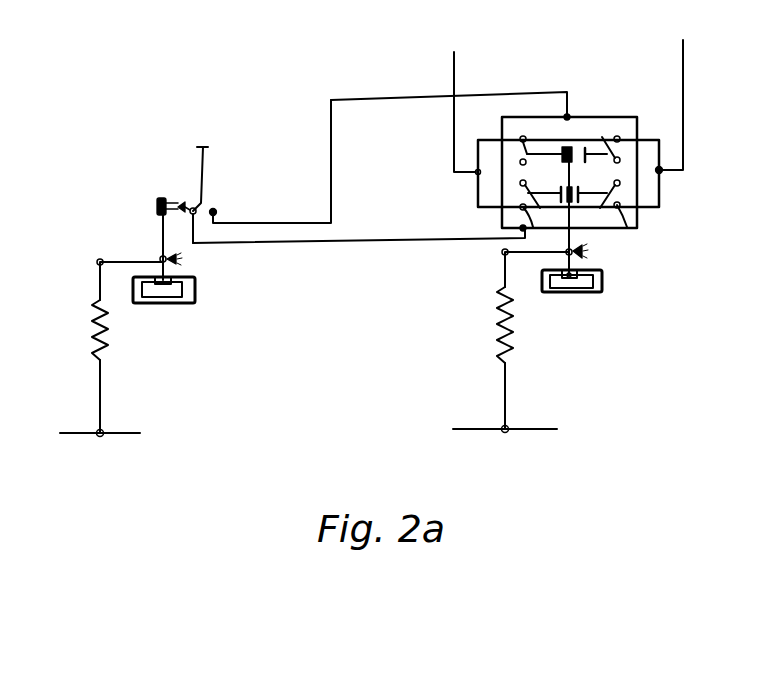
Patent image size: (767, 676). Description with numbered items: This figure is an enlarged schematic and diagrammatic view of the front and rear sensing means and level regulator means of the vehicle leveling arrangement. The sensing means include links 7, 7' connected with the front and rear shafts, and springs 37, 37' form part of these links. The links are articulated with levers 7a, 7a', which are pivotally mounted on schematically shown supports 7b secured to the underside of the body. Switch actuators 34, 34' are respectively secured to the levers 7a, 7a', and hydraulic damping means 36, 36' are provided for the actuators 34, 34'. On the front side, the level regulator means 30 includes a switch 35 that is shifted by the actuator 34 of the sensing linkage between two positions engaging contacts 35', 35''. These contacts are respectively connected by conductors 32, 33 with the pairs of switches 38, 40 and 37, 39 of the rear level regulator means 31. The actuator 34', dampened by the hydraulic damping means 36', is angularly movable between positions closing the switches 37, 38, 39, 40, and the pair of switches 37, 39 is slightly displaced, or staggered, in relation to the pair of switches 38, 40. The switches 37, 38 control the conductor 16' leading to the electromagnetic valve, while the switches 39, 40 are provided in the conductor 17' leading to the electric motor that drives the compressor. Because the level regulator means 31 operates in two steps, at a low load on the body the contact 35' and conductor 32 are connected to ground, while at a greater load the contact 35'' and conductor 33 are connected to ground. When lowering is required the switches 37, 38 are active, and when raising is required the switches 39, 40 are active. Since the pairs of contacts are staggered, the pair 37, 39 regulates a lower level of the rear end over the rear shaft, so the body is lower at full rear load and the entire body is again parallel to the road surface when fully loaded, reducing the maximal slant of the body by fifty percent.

The level regulator means 30 is at (147, 205).
The level regulator means 31 is at (682, 185).
The conductor 32 is at (343, 245).
The conductor 33 is at (362, 98).
The switch actuator 34 is at (138, 247).
The switch actuator 34' is at (623, 260).
The switch 35 is at (188, 179).
The contact 35' is at (181, 226).
The contact 35'' is at (271, 161).
The hydraulic damping means 36 is at (185, 308).
The hydraulic damping means 36' is at (599, 287).
The spring / switch 37 is at (311, 229).
The spring 37' is at (481, 325).
The switch 38 is at (533, 214).
The switch 39 is at (617, 136).
The switch 40 is at (622, 214).
The link 7 is at (100, 398).
The link 7' is at (505, 398).
The lever 7a is at (130, 279).
The lever 7a' is at (535, 268).
The support 7b is at (182, 259).
The conductor 16' is at (451, 113).
The conductor 17' is at (691, 107).